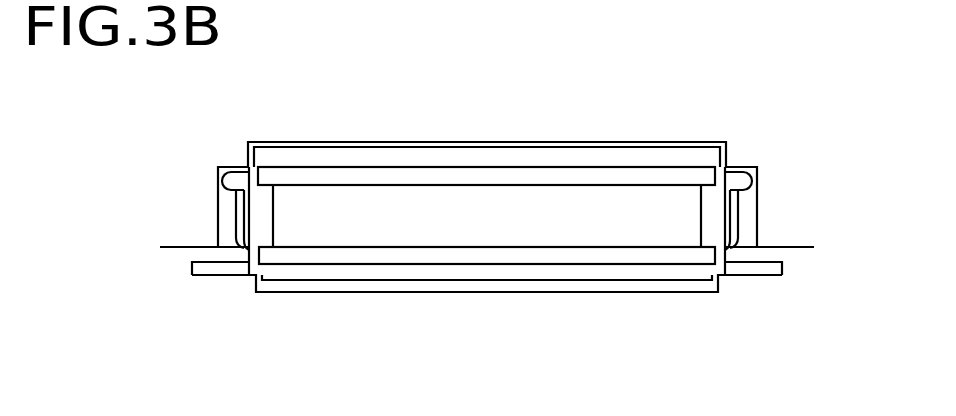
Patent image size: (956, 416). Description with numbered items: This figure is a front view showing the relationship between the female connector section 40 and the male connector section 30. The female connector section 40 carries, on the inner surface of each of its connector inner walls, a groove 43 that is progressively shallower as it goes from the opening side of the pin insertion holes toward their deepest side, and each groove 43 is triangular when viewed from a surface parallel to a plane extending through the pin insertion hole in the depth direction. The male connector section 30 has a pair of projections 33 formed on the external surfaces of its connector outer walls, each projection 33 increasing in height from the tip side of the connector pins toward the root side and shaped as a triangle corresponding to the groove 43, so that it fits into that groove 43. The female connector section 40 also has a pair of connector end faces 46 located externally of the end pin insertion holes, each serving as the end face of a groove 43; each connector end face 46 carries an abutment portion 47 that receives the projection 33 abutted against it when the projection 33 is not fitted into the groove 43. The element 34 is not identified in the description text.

The male connector section 30 is at (500, 238).
The projection 33 is at (236, 178).
The lower housing 34 is at (237, 276).
The female connector section 40 is at (475, 140).
The groove 43 is at (222, 166).
The connector end face 46 is at (175, 237).
The abutment portion 47 is at (227, 237).